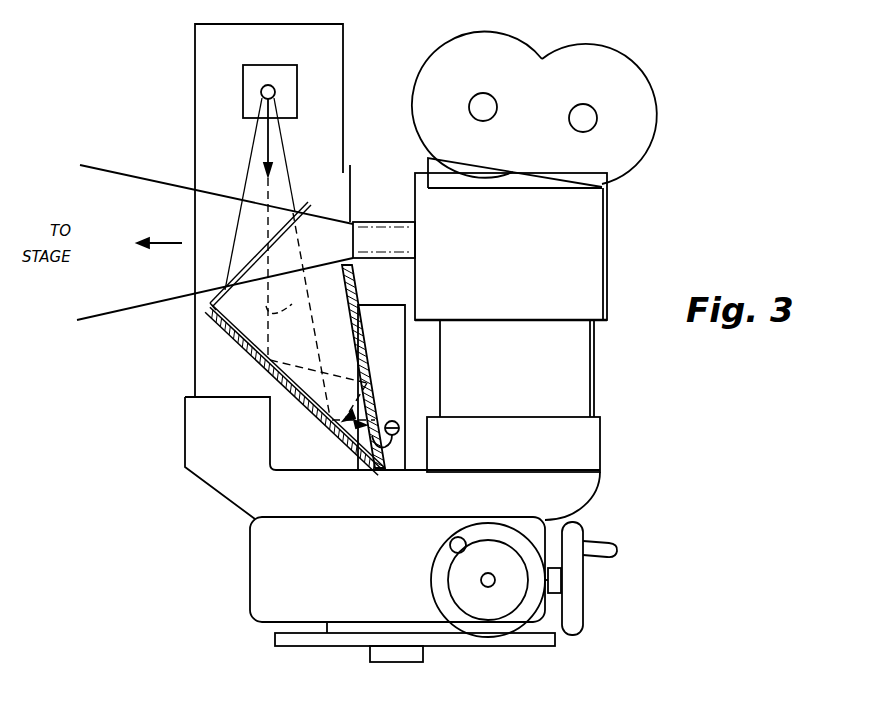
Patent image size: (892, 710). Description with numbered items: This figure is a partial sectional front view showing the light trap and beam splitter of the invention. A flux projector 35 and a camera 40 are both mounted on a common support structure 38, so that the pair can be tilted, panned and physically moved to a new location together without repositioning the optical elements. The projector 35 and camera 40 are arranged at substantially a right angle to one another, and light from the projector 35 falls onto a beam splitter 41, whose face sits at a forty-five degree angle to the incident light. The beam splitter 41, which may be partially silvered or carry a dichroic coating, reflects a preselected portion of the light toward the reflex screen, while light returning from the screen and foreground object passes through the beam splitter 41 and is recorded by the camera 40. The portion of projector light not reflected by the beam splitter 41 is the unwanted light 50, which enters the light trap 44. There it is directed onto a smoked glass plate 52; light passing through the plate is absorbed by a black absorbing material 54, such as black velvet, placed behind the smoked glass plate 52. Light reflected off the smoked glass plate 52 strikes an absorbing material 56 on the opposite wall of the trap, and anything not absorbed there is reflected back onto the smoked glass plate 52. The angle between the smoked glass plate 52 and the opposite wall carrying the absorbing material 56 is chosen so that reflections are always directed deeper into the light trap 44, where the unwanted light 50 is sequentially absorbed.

The flux projector 35 is at (346, 40).
The support structure 38 is at (230, 502).
The camera 40 is at (534, 252).
The beam splitter 41 is at (238, 272).
The light trap 44 is at (261, 390).
The unwanted light 50 is at (286, 298).
The smoked glass plate 52 is at (279, 372).
The black absorbing material 54 is at (306, 412).
The absorbing material 56 is at (357, 322).